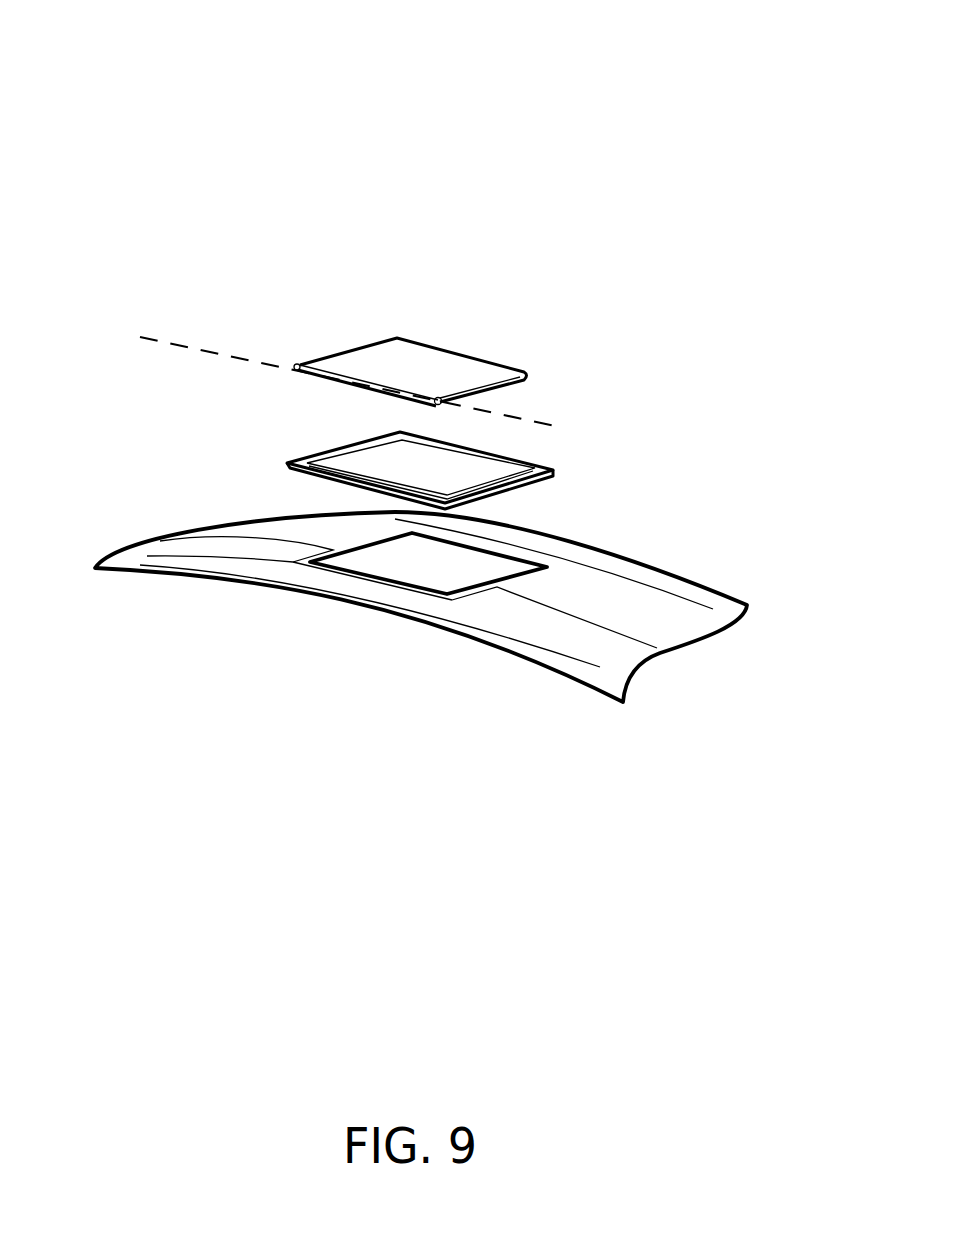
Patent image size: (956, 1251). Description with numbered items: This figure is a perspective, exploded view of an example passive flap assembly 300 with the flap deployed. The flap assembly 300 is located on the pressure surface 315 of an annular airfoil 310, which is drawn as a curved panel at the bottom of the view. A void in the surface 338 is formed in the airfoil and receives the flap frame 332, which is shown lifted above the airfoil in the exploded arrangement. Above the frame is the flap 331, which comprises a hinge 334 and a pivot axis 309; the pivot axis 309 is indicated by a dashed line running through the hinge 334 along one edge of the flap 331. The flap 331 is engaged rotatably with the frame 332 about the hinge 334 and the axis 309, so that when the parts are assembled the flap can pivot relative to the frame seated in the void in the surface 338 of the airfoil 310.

The flap assembly 300 is at (107, 45).
The pivot axis 309 is at (140, 340).
The annular airfoil 310 is at (483, 670).
The pressure surface 315 is at (322, 533).
The flap 331 is at (382, 363).
The flap frame 332 is at (287, 463).
The hinge 334 is at (297, 362).
The void in the surface 338 is at (405, 571).